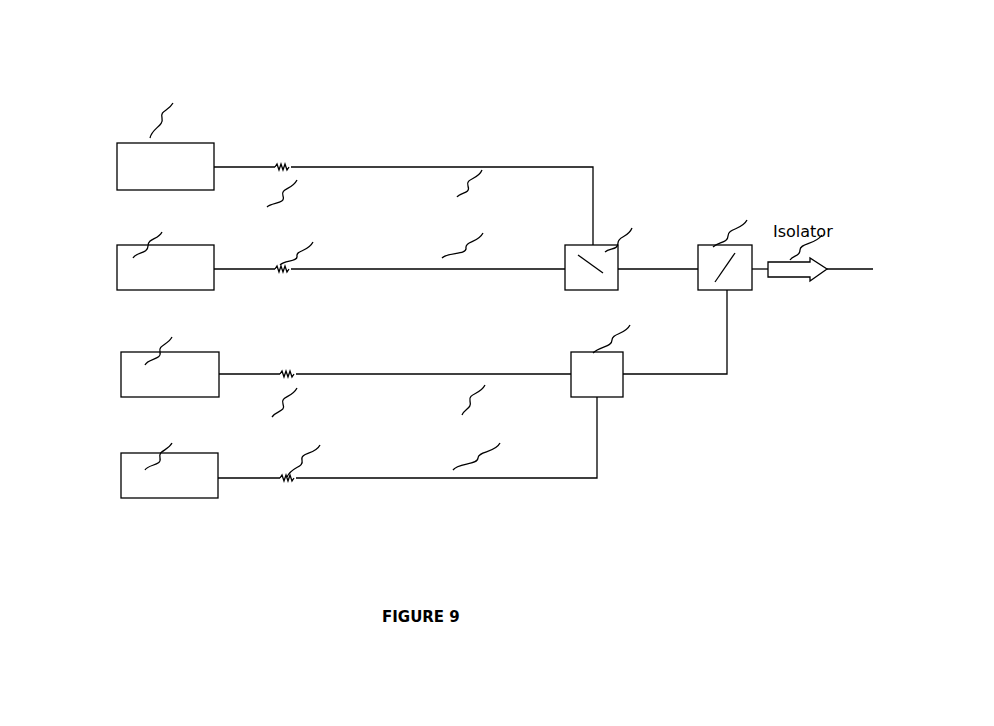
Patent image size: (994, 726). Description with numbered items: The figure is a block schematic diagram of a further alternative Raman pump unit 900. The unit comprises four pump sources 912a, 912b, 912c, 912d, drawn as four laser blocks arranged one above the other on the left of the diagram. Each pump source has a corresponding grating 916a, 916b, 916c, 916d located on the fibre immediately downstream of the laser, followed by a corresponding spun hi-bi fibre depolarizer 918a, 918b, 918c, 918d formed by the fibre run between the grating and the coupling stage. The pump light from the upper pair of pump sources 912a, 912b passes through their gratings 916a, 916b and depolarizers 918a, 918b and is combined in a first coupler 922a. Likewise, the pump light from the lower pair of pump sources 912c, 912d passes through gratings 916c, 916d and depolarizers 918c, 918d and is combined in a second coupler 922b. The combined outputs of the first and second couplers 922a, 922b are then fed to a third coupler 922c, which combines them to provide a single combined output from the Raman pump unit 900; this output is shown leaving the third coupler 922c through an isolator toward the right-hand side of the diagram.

The Raman pump unit 900 is at (700, 111).
The pump source 912a is at (117, 168).
The pump source 912b is at (117, 270).
The pump source 912c is at (121, 378).
The pump source 912d is at (121, 480).
The grating 916a is at (278, 163).
The grating 916b is at (278, 272).
The grating 916c is at (285, 373).
The grating 916d is at (287, 480).
The spun hi-bi fibre depolarizer 918a is at (443, 163).
The spun hi-bi fibre depolarizer 918b is at (427, 272).
The spun hi-bi fibre depolarizer 918c is at (427, 372).
The spun hi-bi fibre depolarizer 918d is at (447, 480).
The first coupler 922a is at (621, 253).
The second coupler 922b is at (623, 395).
The third coupler 922c is at (752, 290).